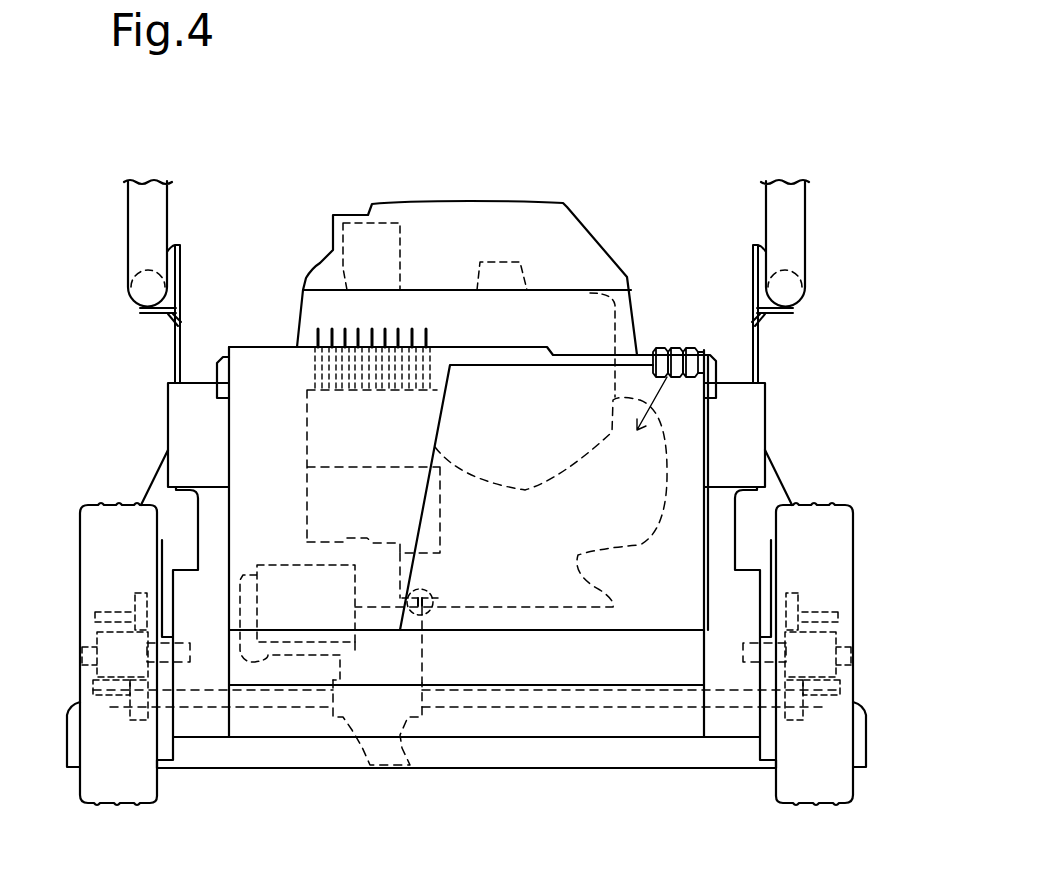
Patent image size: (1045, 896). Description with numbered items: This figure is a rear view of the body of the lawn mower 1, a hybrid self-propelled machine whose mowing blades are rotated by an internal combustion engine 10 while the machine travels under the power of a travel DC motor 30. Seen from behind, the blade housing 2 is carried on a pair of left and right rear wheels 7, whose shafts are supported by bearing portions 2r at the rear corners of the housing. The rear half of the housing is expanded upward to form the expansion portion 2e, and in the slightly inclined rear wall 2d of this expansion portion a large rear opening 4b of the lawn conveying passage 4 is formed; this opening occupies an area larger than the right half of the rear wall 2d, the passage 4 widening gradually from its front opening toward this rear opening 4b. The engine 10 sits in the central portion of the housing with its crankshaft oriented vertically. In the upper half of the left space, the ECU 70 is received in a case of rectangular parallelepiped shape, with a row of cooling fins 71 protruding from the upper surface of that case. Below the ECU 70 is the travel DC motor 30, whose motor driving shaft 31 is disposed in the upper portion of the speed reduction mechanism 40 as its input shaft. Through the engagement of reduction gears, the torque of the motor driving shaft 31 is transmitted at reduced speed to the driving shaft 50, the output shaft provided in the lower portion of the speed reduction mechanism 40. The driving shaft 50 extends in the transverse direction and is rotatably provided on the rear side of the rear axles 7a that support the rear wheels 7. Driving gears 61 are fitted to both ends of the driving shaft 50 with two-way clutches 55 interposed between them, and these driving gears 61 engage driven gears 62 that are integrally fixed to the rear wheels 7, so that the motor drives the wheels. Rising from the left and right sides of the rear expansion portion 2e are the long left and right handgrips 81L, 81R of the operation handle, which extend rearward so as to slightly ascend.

The lawn mower 1 is at (496, 112).
The blade housing 2 is at (465, 337).
The rear wall 2d is at (260, 420).
The expansion portion 2e is at (497, 353).
The bearing portion 2r is at (175, 680).
The lawn conveying passage 4 is at (670, 346).
The rear opening 4b is at (572, 526).
The rear wheel 7 is at (115, 805).
The rear axle 7a is at (115, 645).
The internal combustion engine 10 is at (668, 470).
The travel DC motor 30 is at (275, 565).
The motor driving shaft 31 is at (382, 597).
The speed reduction mechanism 40 is at (421, 653).
The driving shaft 50 is at (497, 707).
The two-way clutch 55 is at (133, 715).
The driving gear 61 is at (137, 720).
The driven gear 62 is at (135, 597).
The ECU 70 is at (305, 425).
The cooling fin 71 is at (358, 330).
The left handgrip 81L is at (167, 194).
The right handgrip 81R is at (766, 194).